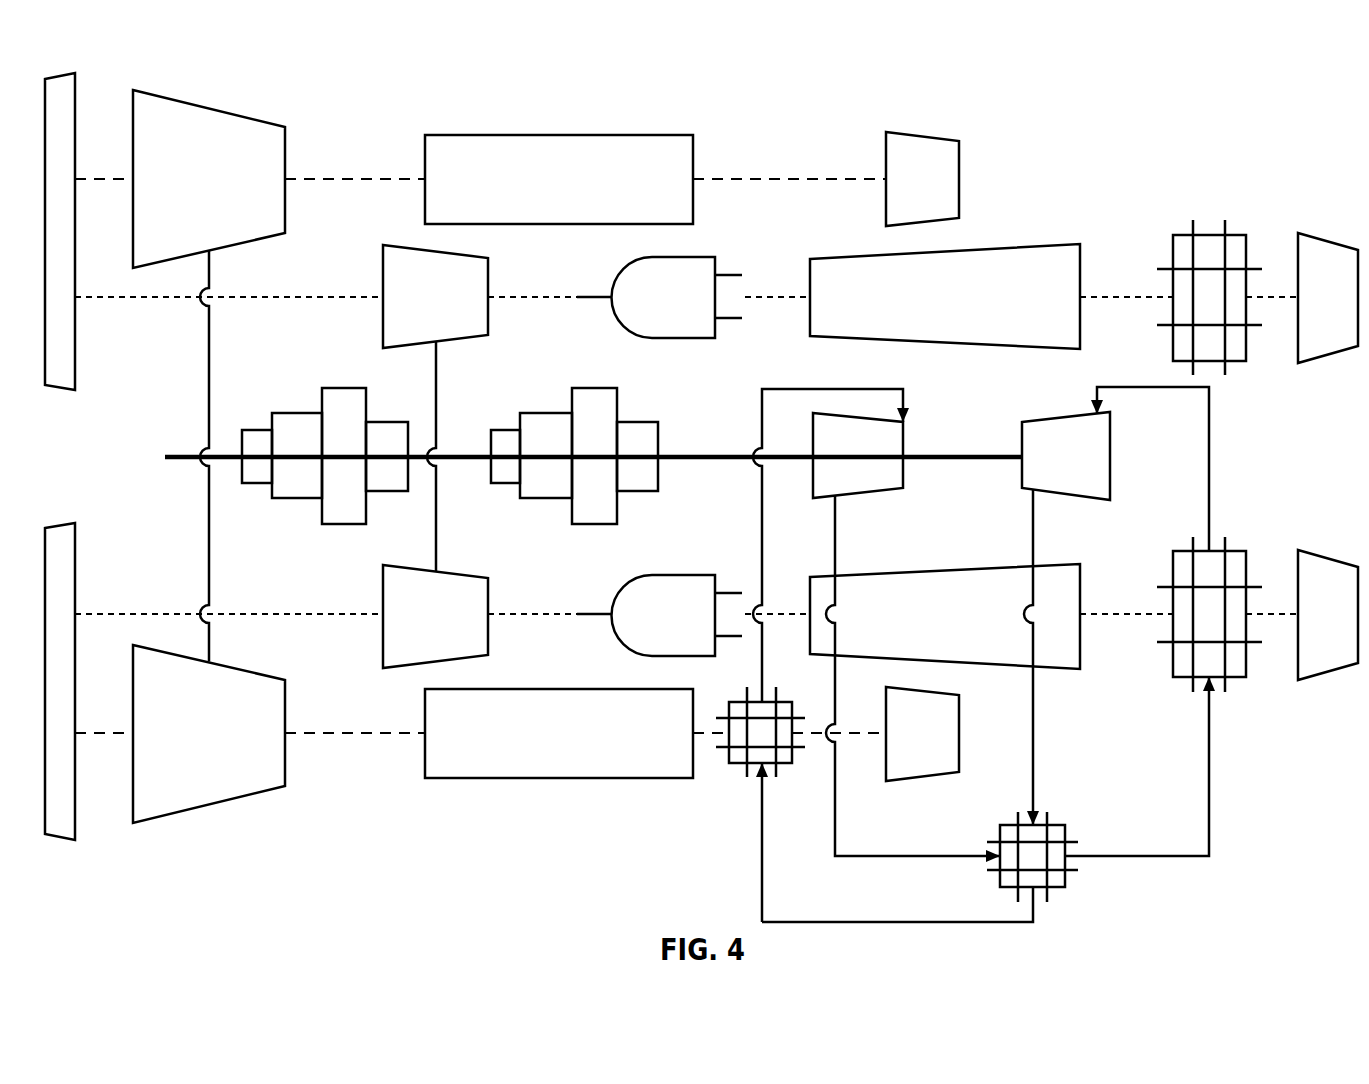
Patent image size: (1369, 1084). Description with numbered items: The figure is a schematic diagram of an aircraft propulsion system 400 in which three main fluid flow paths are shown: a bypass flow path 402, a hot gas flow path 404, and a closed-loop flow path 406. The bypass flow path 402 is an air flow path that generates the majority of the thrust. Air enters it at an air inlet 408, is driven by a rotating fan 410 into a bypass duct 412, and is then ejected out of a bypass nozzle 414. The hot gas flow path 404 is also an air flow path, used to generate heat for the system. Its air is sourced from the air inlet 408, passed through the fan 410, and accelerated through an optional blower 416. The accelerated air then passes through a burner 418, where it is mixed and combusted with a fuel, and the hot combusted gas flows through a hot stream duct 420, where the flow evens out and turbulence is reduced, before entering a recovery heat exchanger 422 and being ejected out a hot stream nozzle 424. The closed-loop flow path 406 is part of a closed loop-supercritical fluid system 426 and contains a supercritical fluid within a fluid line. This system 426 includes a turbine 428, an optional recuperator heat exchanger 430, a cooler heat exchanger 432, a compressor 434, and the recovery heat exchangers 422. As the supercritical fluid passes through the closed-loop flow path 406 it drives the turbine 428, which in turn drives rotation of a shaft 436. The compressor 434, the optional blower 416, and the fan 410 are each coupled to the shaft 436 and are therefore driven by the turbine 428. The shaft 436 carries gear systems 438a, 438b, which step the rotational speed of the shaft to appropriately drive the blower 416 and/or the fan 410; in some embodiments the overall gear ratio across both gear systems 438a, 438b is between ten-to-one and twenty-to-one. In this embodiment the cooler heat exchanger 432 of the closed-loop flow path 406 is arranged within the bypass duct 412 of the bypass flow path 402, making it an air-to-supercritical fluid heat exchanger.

The aircraft propulsion system 400 is at (127, 70).
The bypass flow path 402 is at (338, 178).
The hot gas flow path 404 is at (173, 302).
The closed-loop flow path 406 is at (1117, 860).
The air inlet 408 is at (67, 363).
The fan 410 is at (222, 123).
The bypass duct 412 is at (522, 134).
The bypass nozzle 414 is at (933, 155).
The blower 416 is at (393, 280).
The burner 418 is at (708, 250).
The hot stream duct 420 is at (1007, 257).
The recovery heat exchanger 422 is at (1237, 362).
The hot stream nozzle 424 is at (1308, 248).
The closed loop-supercritical fluid system 426 is at (1029, 658).
The turbine 428 is at (1095, 440).
The recuperator heat exchanger 430 is at (1055, 888).
The cooler heat exchanger 432 is at (737, 768).
The compressor 434 is at (892, 438).
The shaft 436 is at (740, 455).
The gear system 438a is at (593, 395).
The gear system 438b is at (337, 392).